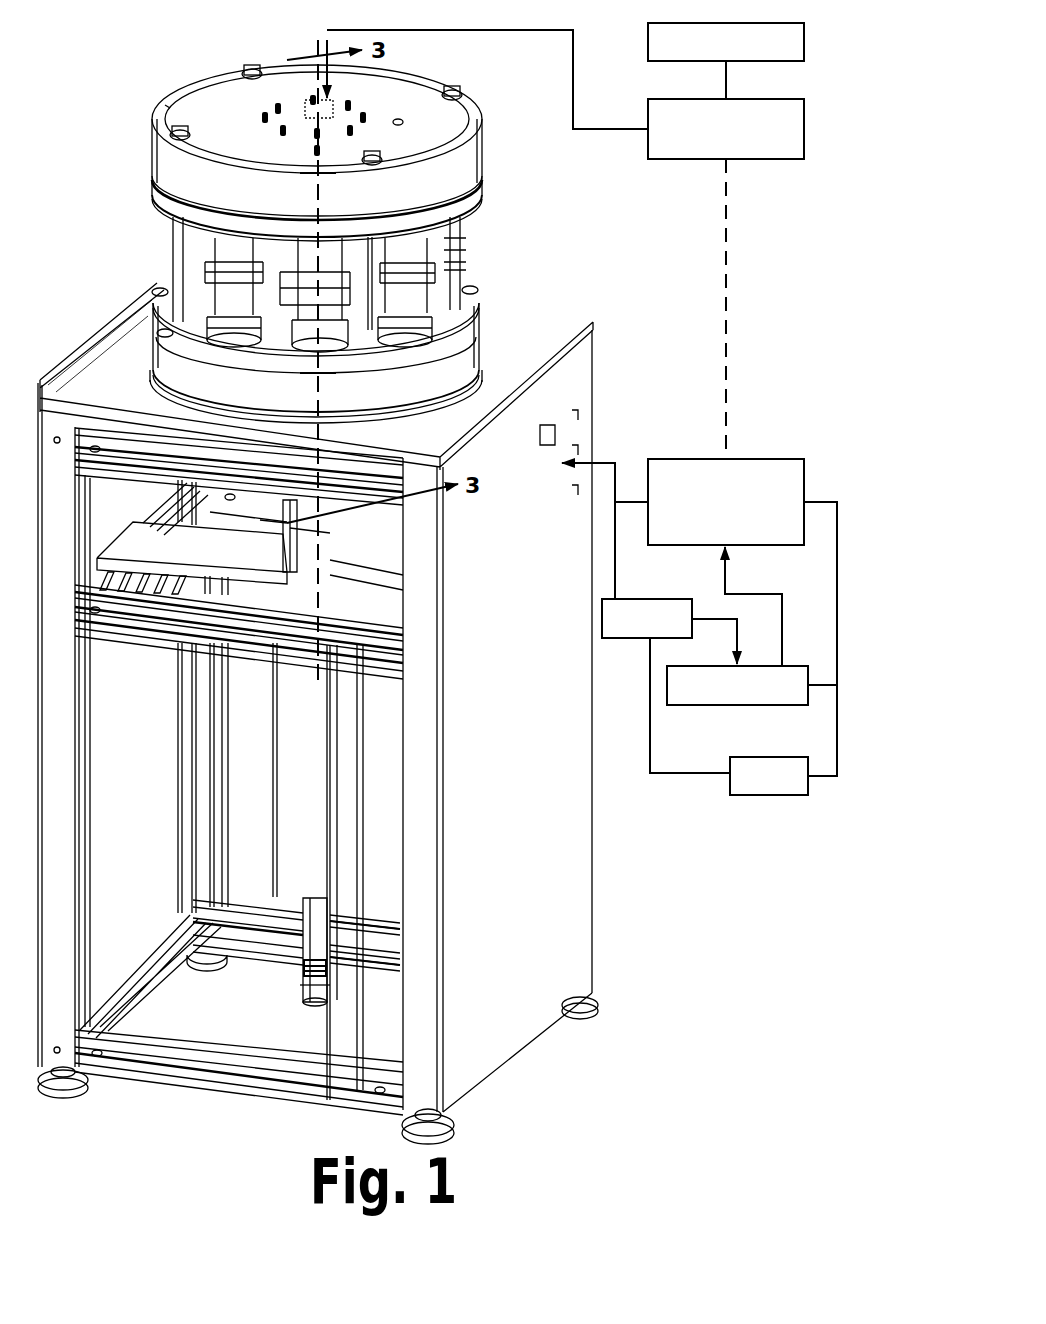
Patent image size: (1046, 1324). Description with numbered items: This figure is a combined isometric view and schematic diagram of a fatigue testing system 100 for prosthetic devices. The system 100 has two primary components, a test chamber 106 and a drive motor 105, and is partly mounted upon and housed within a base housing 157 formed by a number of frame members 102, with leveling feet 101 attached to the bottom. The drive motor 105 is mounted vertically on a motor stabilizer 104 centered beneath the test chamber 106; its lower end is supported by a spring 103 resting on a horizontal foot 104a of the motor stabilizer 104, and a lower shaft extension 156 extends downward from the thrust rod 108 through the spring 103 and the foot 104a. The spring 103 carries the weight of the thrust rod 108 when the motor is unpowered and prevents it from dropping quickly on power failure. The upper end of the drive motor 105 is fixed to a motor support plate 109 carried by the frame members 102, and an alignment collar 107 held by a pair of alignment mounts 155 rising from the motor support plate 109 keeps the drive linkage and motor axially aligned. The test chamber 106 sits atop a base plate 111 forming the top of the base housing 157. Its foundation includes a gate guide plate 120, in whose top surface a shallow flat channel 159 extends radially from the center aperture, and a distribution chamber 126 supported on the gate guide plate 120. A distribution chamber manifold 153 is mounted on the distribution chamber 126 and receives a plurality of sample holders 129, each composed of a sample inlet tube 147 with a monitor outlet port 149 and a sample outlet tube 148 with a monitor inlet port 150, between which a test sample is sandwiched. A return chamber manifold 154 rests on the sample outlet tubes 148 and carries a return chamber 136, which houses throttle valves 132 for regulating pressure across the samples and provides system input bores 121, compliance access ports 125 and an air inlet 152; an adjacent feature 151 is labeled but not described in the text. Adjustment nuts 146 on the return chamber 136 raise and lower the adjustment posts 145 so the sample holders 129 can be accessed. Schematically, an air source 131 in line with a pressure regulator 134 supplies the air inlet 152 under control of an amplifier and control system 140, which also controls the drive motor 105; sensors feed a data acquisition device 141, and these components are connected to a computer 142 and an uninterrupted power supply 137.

The fatigue testing system 100 is at (648, 972).
The leveling feet 101 is at (455, 1133).
The frame members 102 is at (298, 500).
The spring 103 is at (308, 973).
The motor stabilizer 104 is at (343, 792).
The horizontal foot 104a is at (317, 992).
The drive motor 105 is at (290, 780).
The test chamber 106 is at (305, 128).
The alignment collar 107 is at (227, 513).
The thrust rod 108 is at (290, 528).
The motor support plate 109 is at (380, 575).
The base plate 111 is at (479, 355).
The gate guide plate 120 is at (407, 412).
The system input bores 121 is at (152, 127).
The access port 125 is at (398, 122).
The distribution chamber 126 is at (467, 352).
The sample holder 129 is at (452, 245).
The air source 131 is at (648, 42).
The throttle valve 132 is at (262, 113).
The pressure regulator 134 is at (690, 159).
The return chamber 136 is at (478, 147).
The UPS 137 is at (770, 795).
The amplifier and control system 140 is at (698, 545).
The data acquisition device 141 is at (623, 638).
The computer 142 is at (735, 705).
The adjustment posts 145 is at (175, 228).
The adjustment nuts 146 is at (455, 92).
The sample inlet tube 147 is at (455, 265).
The sample outlet tube 148 is at (448, 228).
The monitor outlet port 149 is at (152, 290).
The monitor inlet port 150 is at (222, 232).
The sensor 151 is at (300, 120).
The air inlet 152 is at (300, 117).
The distribution chamber manifold 153 is at (160, 332).
The return chamber manifold 154 is at (152, 190).
The alignment mounts 155 is at (297, 540).
The lower shaft extension 156 is at (305, 970).
The base housing 157 is at (590, 857).
The shallow flat channel 159 is at (478, 378).